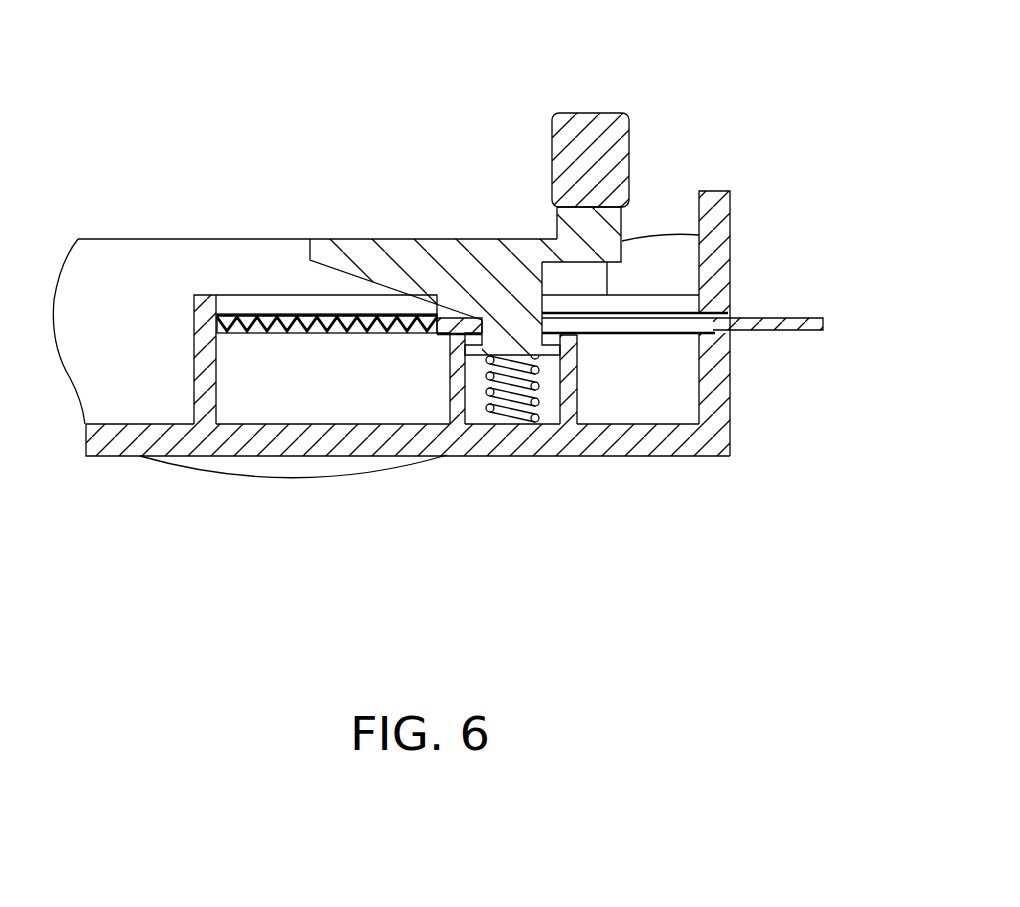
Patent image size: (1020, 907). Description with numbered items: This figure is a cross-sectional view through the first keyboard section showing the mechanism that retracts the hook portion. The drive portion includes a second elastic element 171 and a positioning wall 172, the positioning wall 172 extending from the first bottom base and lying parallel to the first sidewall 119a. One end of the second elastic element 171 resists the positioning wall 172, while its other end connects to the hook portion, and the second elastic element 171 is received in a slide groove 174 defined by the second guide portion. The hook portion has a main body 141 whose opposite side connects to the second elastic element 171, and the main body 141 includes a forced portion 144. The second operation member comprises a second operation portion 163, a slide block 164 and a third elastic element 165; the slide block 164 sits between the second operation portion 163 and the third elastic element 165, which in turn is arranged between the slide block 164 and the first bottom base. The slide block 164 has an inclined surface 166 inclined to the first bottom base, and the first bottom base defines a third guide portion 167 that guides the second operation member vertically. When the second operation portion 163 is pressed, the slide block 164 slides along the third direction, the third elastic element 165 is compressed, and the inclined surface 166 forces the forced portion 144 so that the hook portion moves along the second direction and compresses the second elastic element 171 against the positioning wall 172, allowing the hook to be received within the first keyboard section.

The first sidewall 119a is at (713, 200).
The main body 141 is at (750, 323).
The forced portion 144 is at (450, 310).
The second operation portion 163 is at (603, 123).
The slide block 164 is at (492, 253).
The third elastic element 165 is at (512, 415).
The inclined surface 166 is at (353, 275).
The third guide portion 167 is at (577, 380).
The second elastic element 171 is at (245, 313).
The positioning wall 172 is at (210, 373).
The slide groove 174 is at (270, 313).